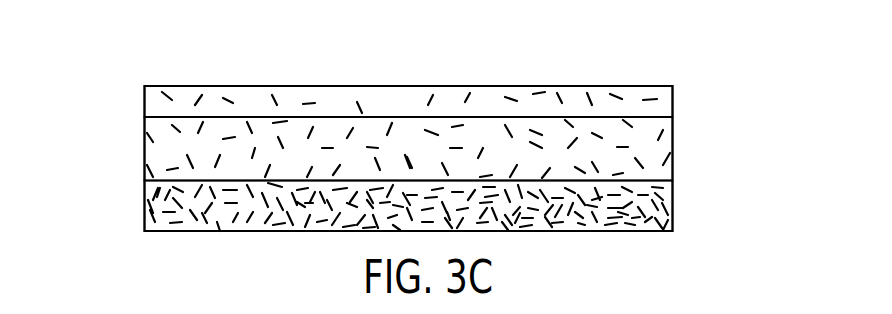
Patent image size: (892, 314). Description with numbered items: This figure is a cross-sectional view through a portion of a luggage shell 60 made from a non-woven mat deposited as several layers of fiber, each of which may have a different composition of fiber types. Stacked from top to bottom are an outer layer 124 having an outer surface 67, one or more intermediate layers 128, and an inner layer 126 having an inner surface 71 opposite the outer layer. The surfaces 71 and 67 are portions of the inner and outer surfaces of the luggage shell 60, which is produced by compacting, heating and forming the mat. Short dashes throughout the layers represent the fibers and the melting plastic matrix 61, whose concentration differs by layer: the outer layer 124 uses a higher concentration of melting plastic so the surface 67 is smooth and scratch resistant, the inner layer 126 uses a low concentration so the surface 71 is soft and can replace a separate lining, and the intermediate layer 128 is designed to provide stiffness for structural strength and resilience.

The luggage shell 60 is at (124, 46).
The matrix 61 is at (163, 150).
The outer surface 67 is at (440, 86).
The inner surface 71 is at (250, 233).
The outer layer 124 is at (144, 97).
The intermediate layer 128 is at (144, 142).
The inner layer 126 is at (144, 211).